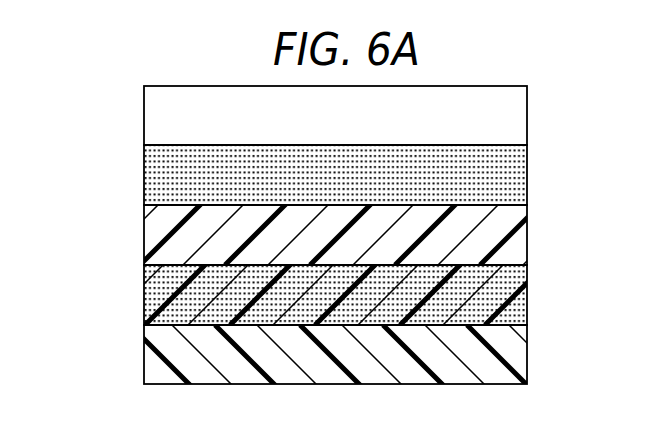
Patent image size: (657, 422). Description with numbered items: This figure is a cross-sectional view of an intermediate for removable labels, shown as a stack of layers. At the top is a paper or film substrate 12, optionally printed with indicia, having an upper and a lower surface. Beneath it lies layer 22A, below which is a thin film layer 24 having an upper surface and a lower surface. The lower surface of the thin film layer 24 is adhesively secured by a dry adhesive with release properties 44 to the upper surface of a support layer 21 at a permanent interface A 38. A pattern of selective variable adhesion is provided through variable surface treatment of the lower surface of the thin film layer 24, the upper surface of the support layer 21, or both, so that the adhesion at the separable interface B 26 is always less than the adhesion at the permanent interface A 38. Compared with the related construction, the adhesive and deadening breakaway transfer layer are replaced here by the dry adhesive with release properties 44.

The paper or film substrate 12 is at (142, 122).
The first layer 22A is at (142, 178).
The thin film layer 24 is at (145, 232).
The dry adhesive with release properties 44 is at (145, 288).
The support layer 21 is at (145, 345).
The permanent interface A 38 is at (527, 263).
The separable interface B 26 is at (527, 322).